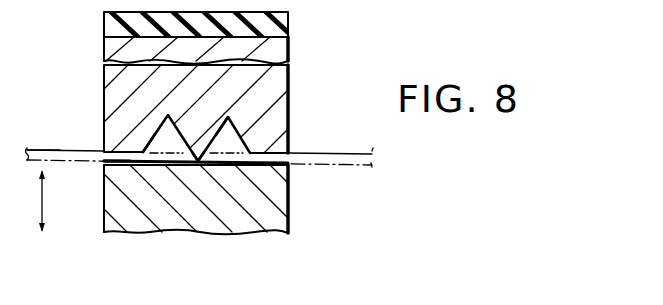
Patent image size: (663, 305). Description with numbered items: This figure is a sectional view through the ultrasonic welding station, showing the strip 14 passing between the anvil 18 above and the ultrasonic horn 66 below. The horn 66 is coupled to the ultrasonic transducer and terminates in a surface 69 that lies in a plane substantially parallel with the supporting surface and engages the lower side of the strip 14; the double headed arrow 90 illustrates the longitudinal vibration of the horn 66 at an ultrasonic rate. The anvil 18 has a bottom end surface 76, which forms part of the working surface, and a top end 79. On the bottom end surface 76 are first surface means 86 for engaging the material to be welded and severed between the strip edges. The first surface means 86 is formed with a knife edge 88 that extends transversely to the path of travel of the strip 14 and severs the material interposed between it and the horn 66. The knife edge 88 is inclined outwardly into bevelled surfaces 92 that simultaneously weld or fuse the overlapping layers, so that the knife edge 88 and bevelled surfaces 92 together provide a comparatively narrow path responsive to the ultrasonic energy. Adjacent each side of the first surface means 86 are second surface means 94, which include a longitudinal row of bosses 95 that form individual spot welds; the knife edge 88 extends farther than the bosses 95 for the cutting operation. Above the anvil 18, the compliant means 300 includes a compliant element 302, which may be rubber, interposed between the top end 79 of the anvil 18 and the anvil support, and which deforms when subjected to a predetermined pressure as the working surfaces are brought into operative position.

The strip 14 is at (348, 165).
The anvil 18 is at (297, 100).
The ultrasonic horn 66 is at (277, 222).
The surface 69 is at (101, 165).
The bottom end surface 76 is at (300, 153).
The top end 79 is at (288, 45).
The first surface means 86 is at (198, 158).
The knife edge 88 is at (199, 163).
The double headed arrow 90 is at (44, 203).
The bevelled surfaces 92 is at (145, 150).
The second surface means 94 is at (97, 158).
The bosses 95 is at (106, 196).
The compliant means 300 is at (97, 28).
The compliant element 302 is at (288, 16).